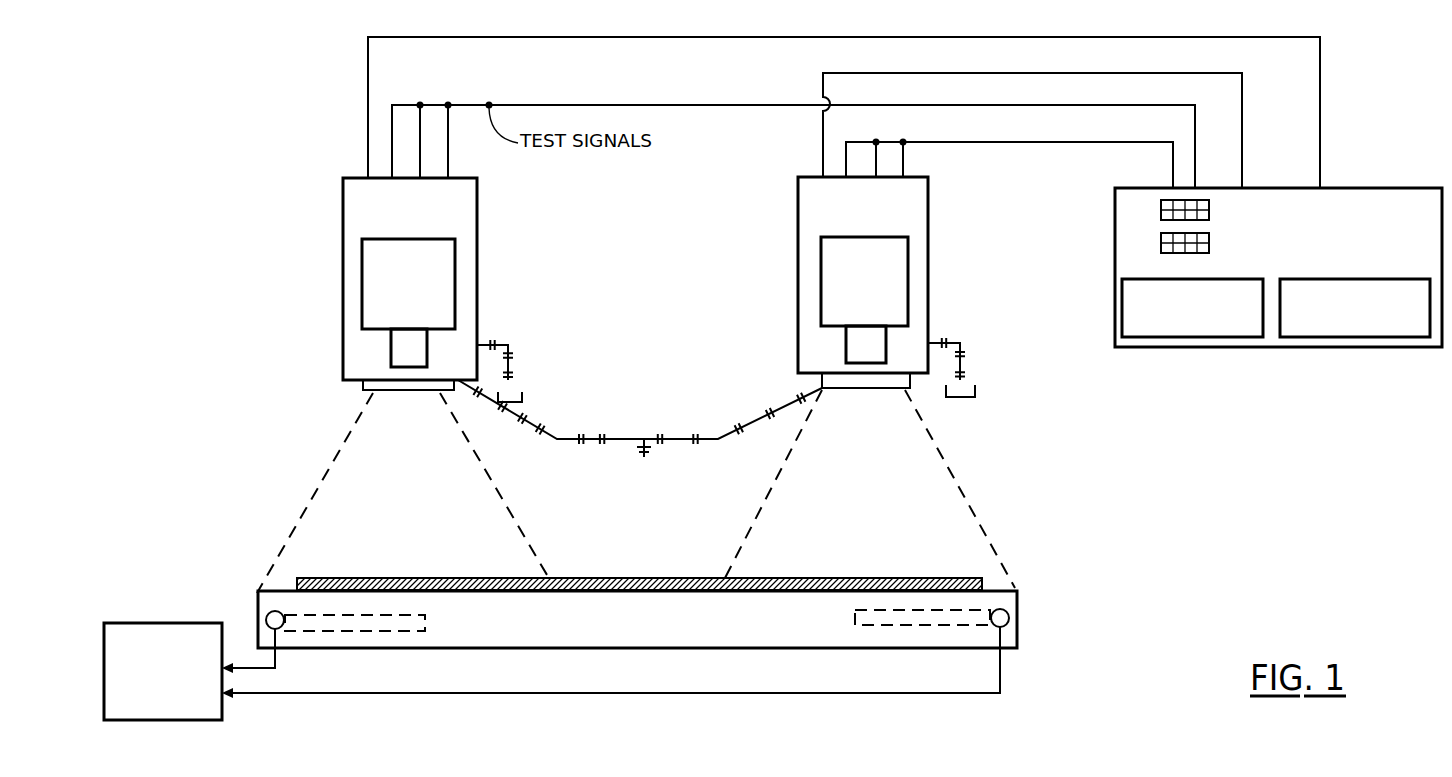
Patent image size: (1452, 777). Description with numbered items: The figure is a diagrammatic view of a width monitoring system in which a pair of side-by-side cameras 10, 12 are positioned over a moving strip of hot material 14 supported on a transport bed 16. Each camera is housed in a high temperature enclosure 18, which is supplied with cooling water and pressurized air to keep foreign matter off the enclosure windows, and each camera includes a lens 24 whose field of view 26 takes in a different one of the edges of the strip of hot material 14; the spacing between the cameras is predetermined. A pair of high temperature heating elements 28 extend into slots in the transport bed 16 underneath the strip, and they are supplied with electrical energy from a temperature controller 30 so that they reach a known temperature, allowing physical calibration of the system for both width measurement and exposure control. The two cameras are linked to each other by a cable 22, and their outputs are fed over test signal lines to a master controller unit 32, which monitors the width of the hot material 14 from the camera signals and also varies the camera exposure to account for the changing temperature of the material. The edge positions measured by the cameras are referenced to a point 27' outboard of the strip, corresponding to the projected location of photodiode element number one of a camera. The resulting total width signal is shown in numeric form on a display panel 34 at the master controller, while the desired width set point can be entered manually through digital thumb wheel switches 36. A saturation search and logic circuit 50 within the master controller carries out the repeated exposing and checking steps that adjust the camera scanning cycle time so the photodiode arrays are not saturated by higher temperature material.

The camera 10 is at (436, 259).
The camera 12 is at (920, 248).
The strip of hot material 14 is at (908, 578).
The transport bed 16 is at (777, 677).
The high temperature enclosure 18 is at (477, 204).
The interconnecting cable 22 is at (622, 438).
The lens 24 is at (418, 350).
The field of view 26 is at (333, 468).
The reference point 27' is at (927, 490).
The high temperature heating elements 28 is at (397, 627).
The temperature controller 30 is at (193, 628).
The master controller unit 32 is at (1251, 292).
The display panel 34 is at (1161, 203).
The digital thumb wheel switches 36 is at (1161, 245).
The saturation search and logic circuit 50 is at (1247, 325).